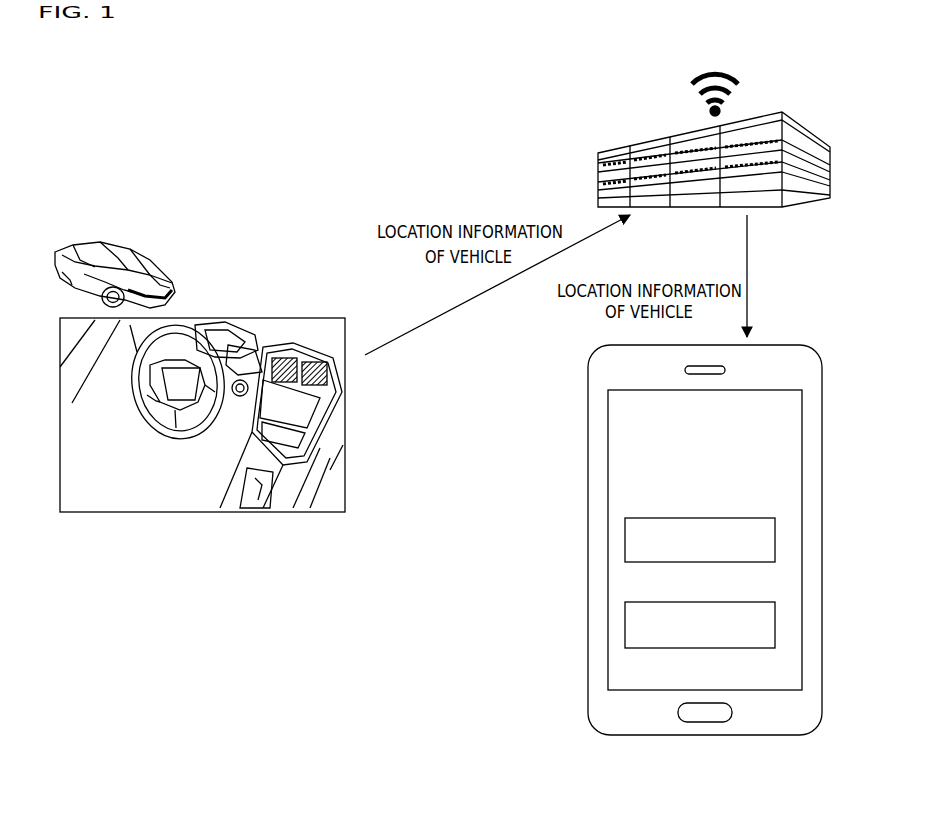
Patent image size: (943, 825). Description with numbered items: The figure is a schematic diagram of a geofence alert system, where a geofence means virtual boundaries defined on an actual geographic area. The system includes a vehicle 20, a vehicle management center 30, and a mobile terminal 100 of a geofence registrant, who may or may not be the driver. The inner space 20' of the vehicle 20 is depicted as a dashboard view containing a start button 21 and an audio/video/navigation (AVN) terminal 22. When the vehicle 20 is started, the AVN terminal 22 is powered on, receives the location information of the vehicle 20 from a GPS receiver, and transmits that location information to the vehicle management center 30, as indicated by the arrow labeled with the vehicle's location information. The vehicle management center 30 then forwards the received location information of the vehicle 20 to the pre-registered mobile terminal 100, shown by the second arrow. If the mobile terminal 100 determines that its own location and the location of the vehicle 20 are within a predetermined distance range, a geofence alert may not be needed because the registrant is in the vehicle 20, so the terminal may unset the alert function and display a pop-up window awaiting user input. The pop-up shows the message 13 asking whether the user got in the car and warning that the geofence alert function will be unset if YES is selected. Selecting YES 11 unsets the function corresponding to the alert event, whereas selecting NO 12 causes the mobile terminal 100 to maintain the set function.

The vehicle 20 is at (115, 258).
The inner space of the vehicle 20' is at (224, 393).
The start button 21 is at (237, 338).
The audio/video/navigation (AVN) terminal 22 is at (323, 373).
The vehicle management center 30 is at (793, 122).
The mobile terminal 100 is at (705, 738).
The pop-up message 13 is at (610, 411).
The YES button 11 is at (622, 538).
The NO button 12 is at (622, 623).